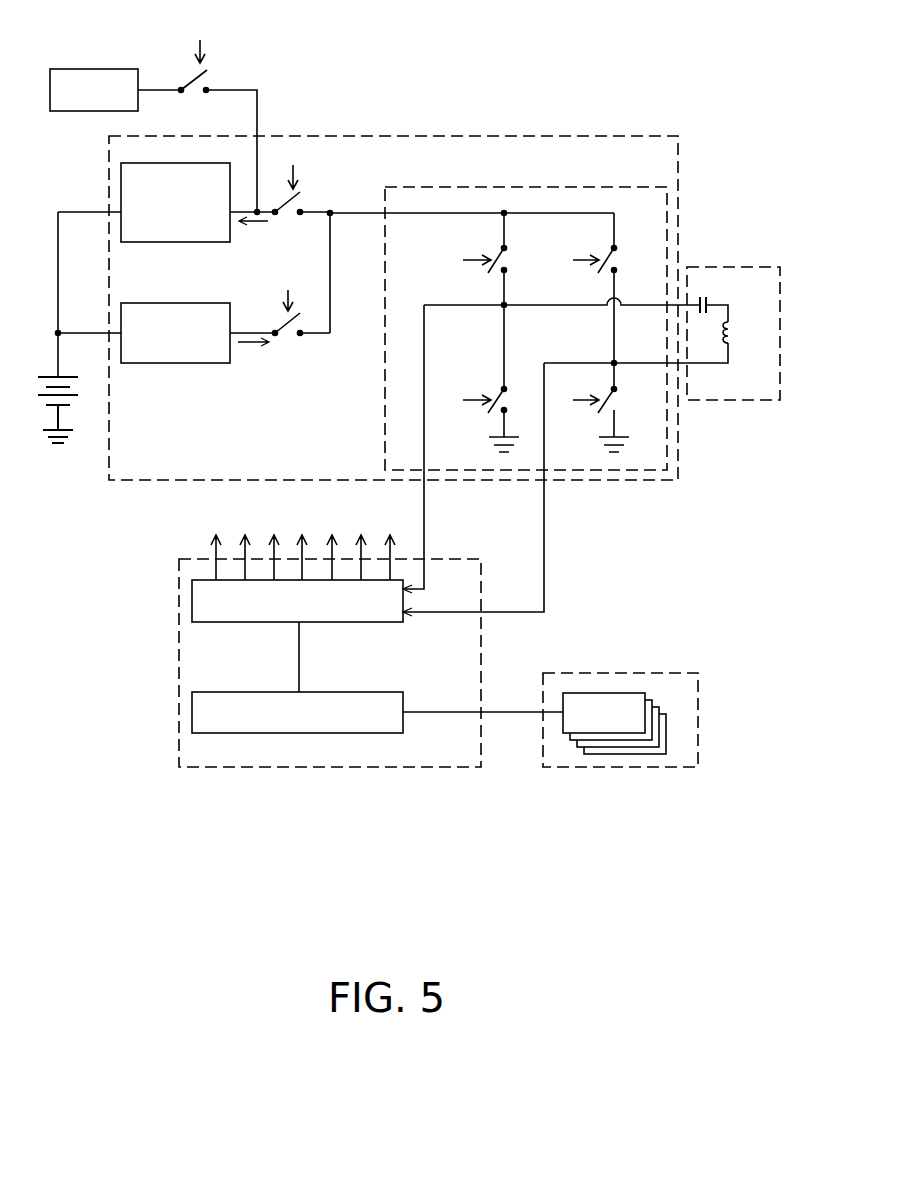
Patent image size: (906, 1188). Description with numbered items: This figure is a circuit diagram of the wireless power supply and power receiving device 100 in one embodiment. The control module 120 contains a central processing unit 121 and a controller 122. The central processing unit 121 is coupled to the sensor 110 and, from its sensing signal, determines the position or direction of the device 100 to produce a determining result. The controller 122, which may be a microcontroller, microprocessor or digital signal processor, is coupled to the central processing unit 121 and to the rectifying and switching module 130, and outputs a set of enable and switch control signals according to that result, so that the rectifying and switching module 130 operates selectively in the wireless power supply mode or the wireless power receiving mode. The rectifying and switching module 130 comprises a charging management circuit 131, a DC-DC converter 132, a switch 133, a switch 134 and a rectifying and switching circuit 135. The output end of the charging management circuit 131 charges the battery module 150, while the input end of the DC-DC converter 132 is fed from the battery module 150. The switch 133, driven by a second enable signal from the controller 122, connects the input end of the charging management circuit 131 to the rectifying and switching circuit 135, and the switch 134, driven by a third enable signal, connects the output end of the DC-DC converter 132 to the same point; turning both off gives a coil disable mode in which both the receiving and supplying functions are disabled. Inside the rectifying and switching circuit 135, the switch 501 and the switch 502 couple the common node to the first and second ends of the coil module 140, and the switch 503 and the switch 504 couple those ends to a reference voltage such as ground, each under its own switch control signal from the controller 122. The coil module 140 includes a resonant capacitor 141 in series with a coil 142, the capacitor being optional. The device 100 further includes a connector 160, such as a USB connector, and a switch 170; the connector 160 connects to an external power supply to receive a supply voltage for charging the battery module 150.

The wireless power supply and power receiving device 100 is at (527, 818).
The sensor 110 is at (620, 672).
The control module 120 is at (179, 640).
The central processing unit 121 is at (340, 692).
The controller 122 is at (347, 622).
The rectifying and switching module 130 is at (455, 135).
The charging management circuit 131 is at (160, 243).
The DC-DC converter 132 is at (160, 363).
The switch 133 is at (290, 216).
The switch 134 is at (286, 338).
The rectifying and switching circuit 135 is at (385, 395).
The coil module 140 is at (718, 400).
The resonant capacitor 141 is at (712, 302).
The coil 142 is at (735, 330).
The battery module 150 is at (78, 385).
The connector 160 is at (93, 68).
The switch 170 is at (191, 96).
The switch 501 is at (508, 260).
The switch 502 is at (615, 262).
The switch 503 is at (507, 400).
The switch 504 is at (615, 398).